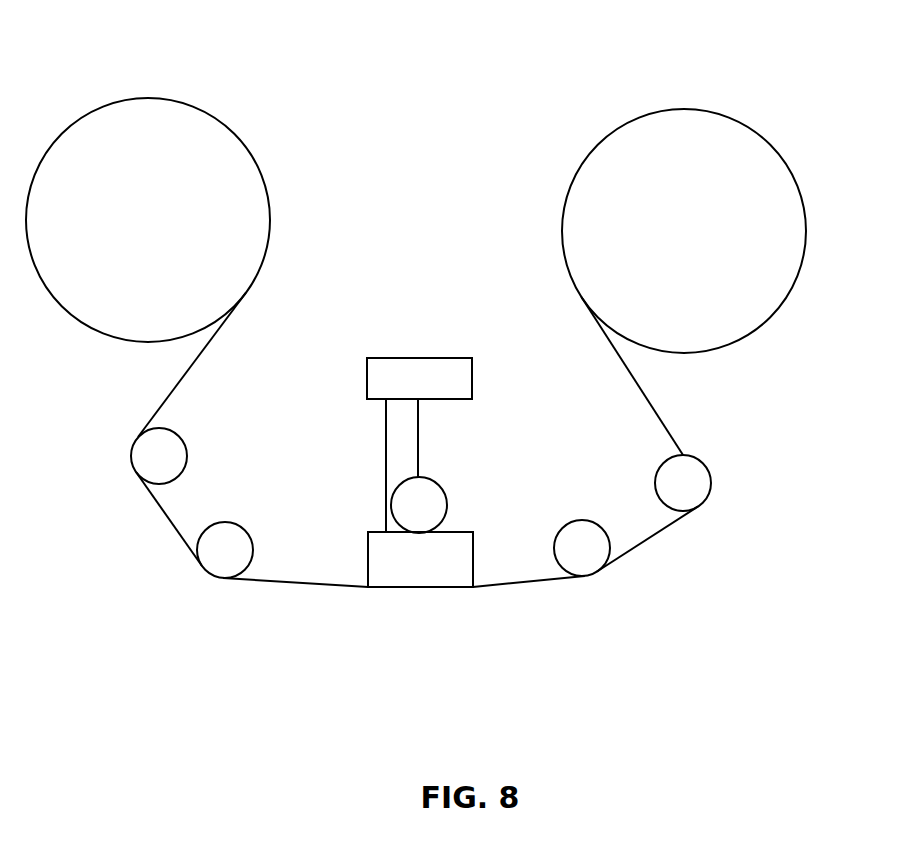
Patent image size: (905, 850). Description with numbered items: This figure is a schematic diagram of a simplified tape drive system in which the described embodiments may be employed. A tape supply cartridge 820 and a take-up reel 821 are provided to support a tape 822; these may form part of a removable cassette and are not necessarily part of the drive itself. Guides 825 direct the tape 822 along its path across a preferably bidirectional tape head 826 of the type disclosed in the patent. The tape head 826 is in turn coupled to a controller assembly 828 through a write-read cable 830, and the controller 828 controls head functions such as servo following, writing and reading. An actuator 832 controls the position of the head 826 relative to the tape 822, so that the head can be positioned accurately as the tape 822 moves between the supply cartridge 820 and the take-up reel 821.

The tape supply cartridge 820 is at (150, 98).
The take-up reel 821 is at (684, 108).
The tape 822 is at (297, 589).
The guides 825 is at (187, 453).
The tape head 826 is at (477, 557).
The controller assembly 828 is at (418, 358).
The write-read cable 830 is at (386, 501).
The actuator 832 is at (440, 483).